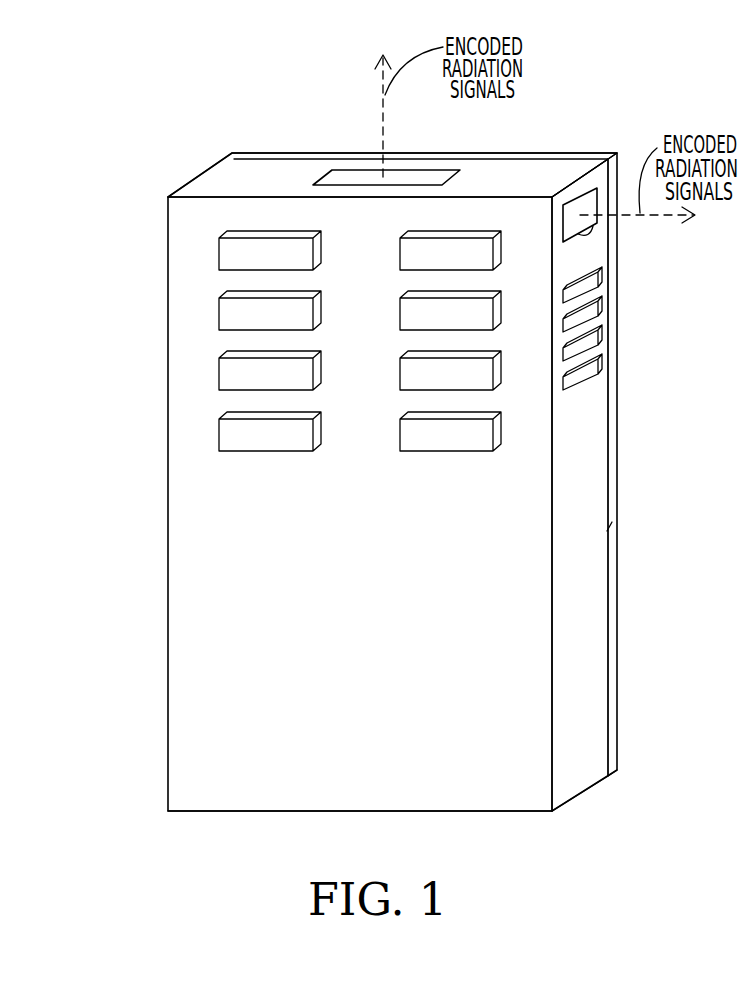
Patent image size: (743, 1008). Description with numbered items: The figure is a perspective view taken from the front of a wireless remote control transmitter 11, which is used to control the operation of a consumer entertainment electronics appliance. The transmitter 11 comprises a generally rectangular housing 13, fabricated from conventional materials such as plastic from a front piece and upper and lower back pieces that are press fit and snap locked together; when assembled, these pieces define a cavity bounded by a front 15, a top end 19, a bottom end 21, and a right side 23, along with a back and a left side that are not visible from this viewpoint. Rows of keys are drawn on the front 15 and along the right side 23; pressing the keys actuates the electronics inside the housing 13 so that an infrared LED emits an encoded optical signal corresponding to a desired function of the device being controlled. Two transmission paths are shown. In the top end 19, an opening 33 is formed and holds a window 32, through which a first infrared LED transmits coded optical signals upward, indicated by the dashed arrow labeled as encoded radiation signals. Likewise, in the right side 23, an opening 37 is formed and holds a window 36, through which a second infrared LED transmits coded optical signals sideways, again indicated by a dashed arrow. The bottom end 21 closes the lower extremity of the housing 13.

The wireless remote control transmitter 11 is at (310, 829).
The housing 13 is at (628, 519).
The front 15 is at (533, 633).
The top end 19 is at (553, 176).
The bottom end 21 is at (433, 813).
The right side 23 is at (585, 443).
The window 32 is at (357, 177).
The opening 33 is at (446, 172).
The window 36 is at (584, 200).
The opening 37 is at (590, 232).